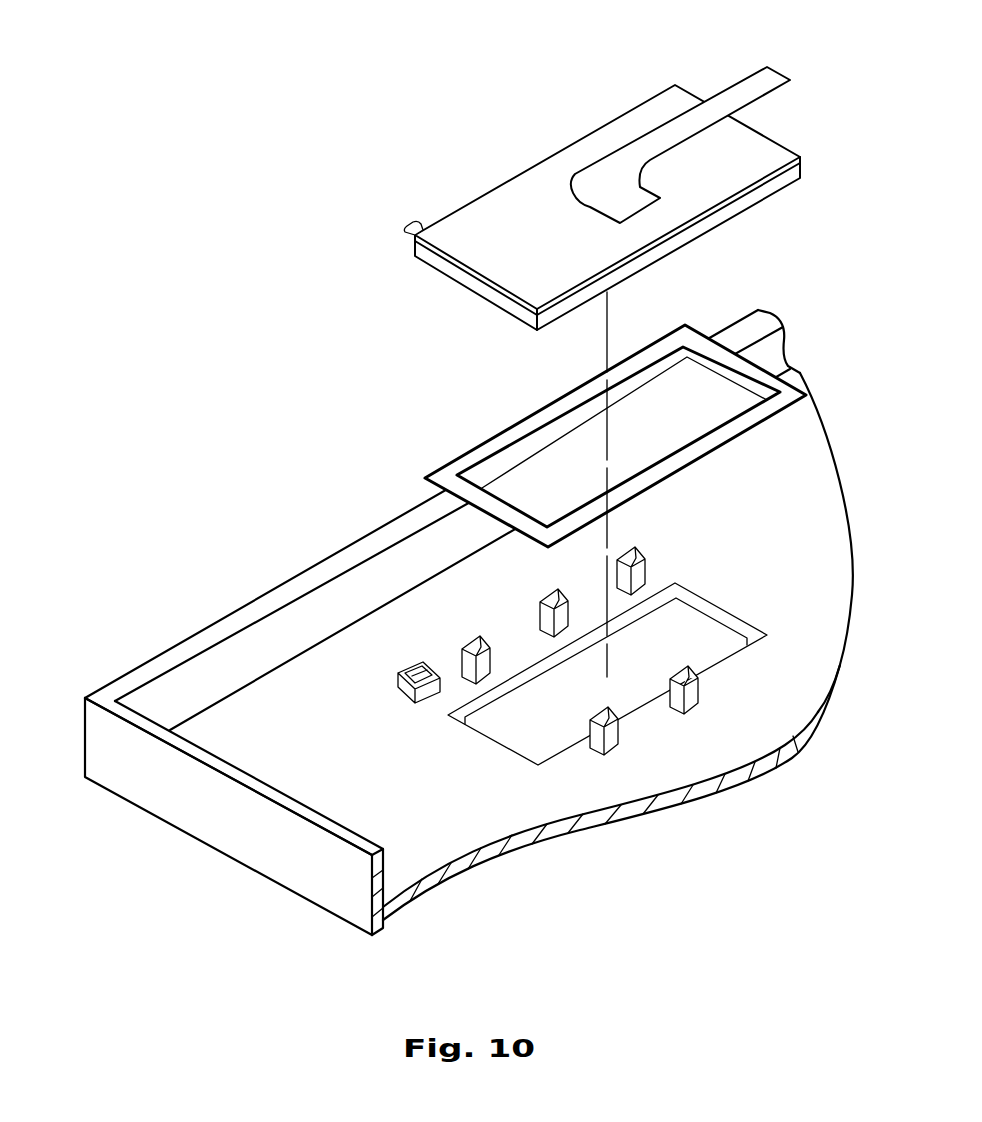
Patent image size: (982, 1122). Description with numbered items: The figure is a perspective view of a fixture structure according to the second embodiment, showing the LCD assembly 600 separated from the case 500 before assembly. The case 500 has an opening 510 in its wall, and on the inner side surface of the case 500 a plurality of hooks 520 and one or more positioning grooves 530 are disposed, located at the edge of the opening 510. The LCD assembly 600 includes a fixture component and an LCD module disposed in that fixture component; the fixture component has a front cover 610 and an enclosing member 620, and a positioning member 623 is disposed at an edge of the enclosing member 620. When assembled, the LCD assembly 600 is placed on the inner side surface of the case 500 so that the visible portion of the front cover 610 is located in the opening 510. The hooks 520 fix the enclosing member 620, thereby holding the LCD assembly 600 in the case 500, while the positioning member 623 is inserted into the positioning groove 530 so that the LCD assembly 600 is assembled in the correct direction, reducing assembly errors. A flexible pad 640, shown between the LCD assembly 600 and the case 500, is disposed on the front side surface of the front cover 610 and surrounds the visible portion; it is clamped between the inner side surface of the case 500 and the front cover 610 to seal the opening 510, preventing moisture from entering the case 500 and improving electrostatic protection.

The case 500 is at (397, 643).
The opening 510 is at (527, 730).
The hooks 520 is at (465, 637).
The positioning groove 530 is at (410, 678).
The LCD assembly 600 is at (541, 174).
The front cover 610 is at (450, 270).
The enclosing member 620 is at (480, 193).
The positioning member 623 is at (405, 230).
The flexible pad 640 is at (690, 332).